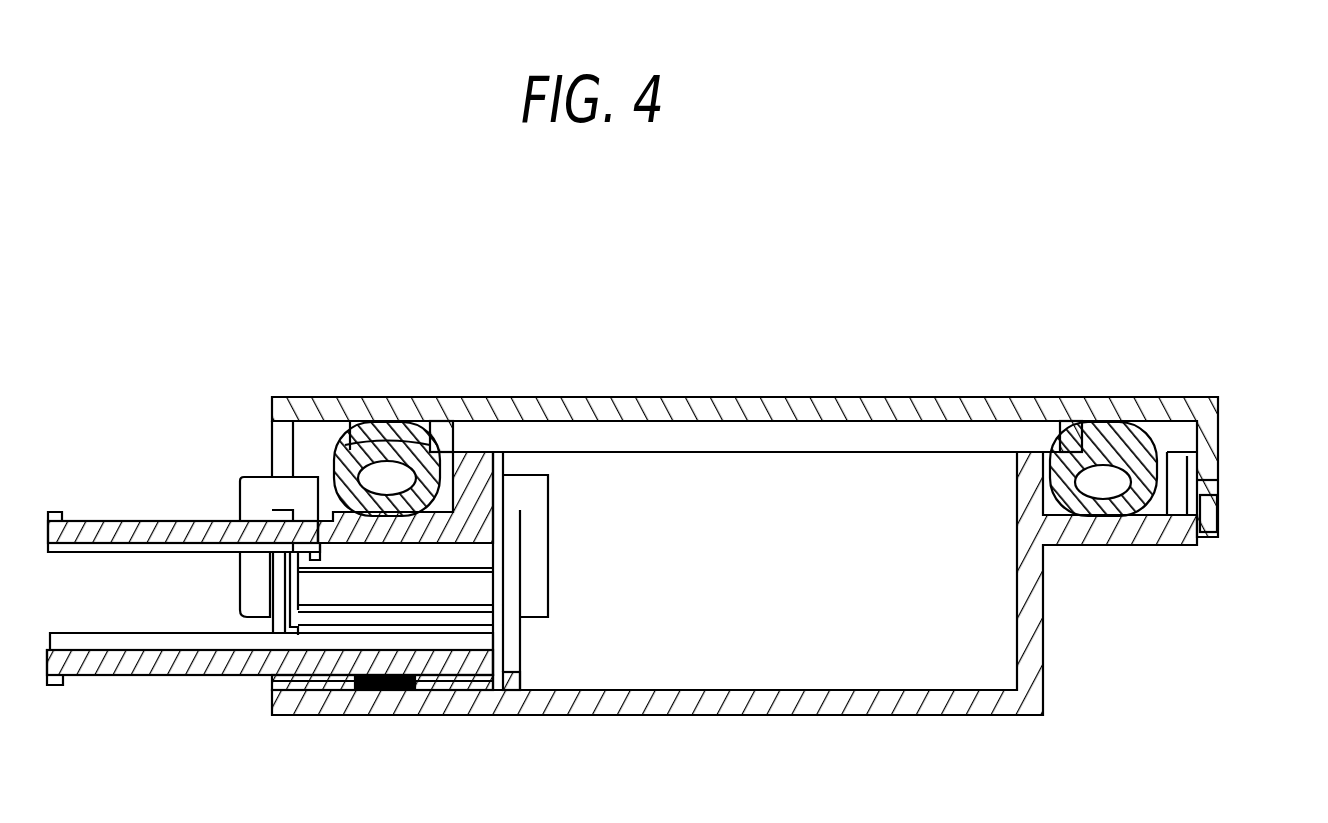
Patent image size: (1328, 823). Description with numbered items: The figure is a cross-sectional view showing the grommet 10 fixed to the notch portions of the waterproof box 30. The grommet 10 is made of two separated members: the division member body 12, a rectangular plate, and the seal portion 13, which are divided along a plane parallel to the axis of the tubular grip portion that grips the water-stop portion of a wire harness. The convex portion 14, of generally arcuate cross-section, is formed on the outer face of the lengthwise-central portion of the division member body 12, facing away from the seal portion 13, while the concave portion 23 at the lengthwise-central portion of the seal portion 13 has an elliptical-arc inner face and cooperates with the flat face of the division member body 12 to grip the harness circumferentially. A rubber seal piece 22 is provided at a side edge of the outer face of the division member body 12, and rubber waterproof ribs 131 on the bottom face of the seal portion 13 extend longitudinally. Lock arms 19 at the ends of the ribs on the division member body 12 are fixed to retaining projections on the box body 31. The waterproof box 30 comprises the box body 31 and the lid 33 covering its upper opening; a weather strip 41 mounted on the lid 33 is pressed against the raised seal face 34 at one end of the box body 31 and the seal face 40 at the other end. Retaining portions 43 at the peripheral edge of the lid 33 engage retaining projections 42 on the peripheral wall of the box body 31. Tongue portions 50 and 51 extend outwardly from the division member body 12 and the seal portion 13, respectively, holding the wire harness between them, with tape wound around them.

The grommet 10 is at (470, 692).
The division member body 12 is at (388, 523).
The seal portion 13 is at (420, 692).
The waterproof ribs 131 is at (355, 692).
The convex portion 14 is at (322, 515).
The lock arm 19 is at (245, 495).
The seal piece 22 is at (490, 453).
The concave portion 23 is at (300, 590).
The waterproof box 30 is at (1031, 356).
The box body 31 is at (710, 715).
The lid 33 is at (720, 397).
The seal face 34 is at (381, 434).
The seal face 40 is at (1160, 500).
The weather strip 41 is at (445, 446).
The retaining projections 42 is at (1222, 497).
The retaining portions 43 is at (1225, 522).
The tongue portion 50 is at (52, 512).
The tongue portion 51 is at (52, 690).